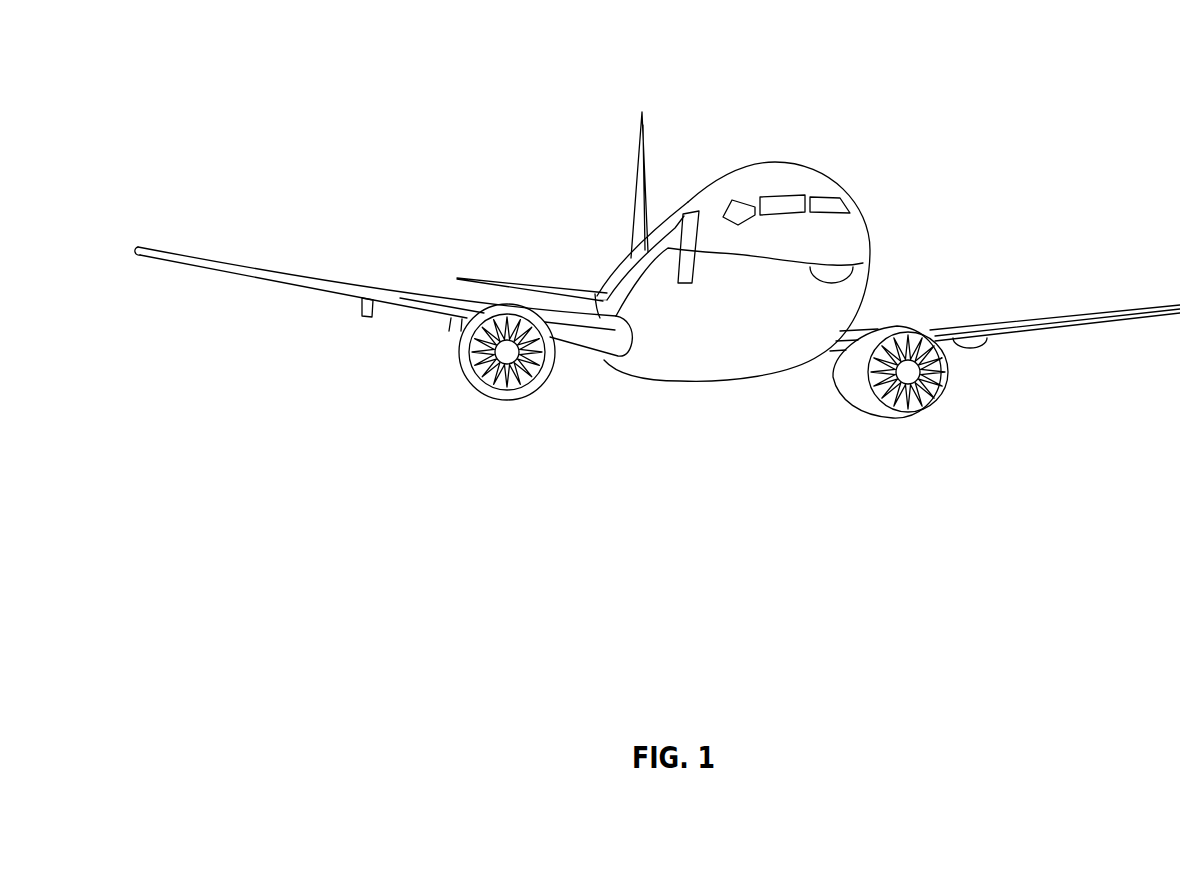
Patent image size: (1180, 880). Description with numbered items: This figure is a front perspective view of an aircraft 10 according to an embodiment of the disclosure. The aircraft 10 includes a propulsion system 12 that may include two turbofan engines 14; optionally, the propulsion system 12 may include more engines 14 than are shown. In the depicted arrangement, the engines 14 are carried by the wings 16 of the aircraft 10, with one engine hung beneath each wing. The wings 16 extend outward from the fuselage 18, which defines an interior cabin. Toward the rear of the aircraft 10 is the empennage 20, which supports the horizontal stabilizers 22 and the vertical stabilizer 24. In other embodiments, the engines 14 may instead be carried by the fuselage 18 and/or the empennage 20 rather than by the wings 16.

The aircraft 10 is at (400, 64).
The propulsion system 12 is at (992, 410).
The turbofan engines 14 is at (500, 400).
The wings 16 is at (272, 270).
The fuselage 18 is at (866, 233).
The empennage 20 is at (630, 262).
The horizontal stabilizers 22 is at (497, 278).
The vertical stabilizer 24 is at (638, 152).